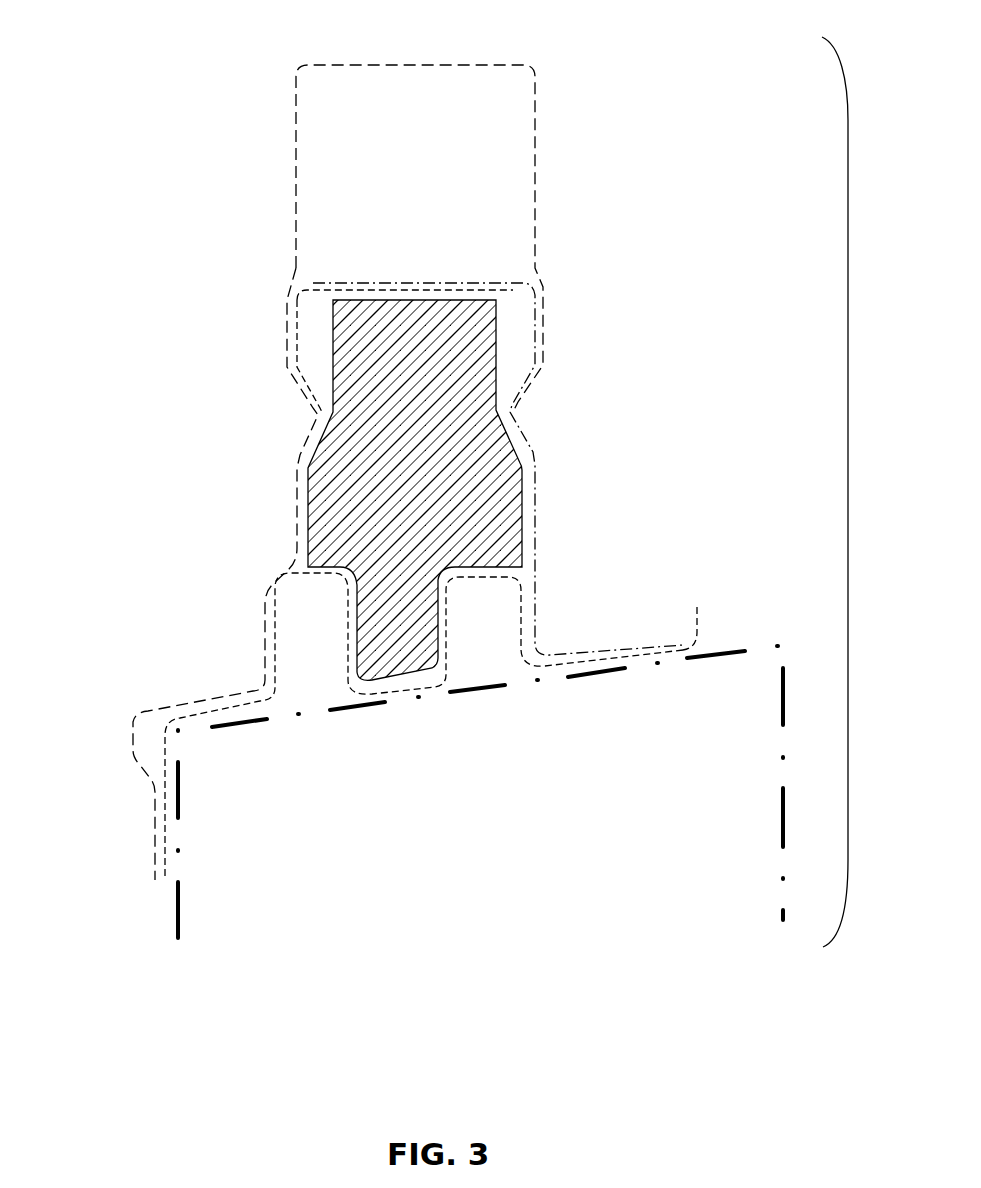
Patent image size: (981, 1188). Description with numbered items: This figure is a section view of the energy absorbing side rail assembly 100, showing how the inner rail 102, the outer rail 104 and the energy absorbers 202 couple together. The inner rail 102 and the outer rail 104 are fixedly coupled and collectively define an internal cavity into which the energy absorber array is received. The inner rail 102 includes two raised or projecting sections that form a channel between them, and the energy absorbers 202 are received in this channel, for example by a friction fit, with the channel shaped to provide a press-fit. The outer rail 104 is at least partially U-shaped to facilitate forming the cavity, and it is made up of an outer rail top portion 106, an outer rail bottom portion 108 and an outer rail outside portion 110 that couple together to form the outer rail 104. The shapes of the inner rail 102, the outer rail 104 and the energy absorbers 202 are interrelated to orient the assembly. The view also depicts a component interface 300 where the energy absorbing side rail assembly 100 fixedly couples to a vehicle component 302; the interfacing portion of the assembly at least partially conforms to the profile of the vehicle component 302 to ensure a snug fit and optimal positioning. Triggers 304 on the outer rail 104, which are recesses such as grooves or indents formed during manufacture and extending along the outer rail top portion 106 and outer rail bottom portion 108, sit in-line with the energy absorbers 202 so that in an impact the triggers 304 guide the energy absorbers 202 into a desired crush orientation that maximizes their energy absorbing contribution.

The energy absorbing side rail assembly 100 is at (404, 472).
The inner rail 102 is at (702, 627).
The outer rail 104 is at (173, 303).
The outer rail top portion 106 is at (543, 508).
The outer rail bottom portion 108 is at (258, 595).
The outer rail outside portion 110 is at (543, 183).
The energy absorber 202 is at (350, 503).
The component interface 300 is at (863, 492).
The vehicle component 302 is at (165, 918).
The trigger 304 is at (307, 413).